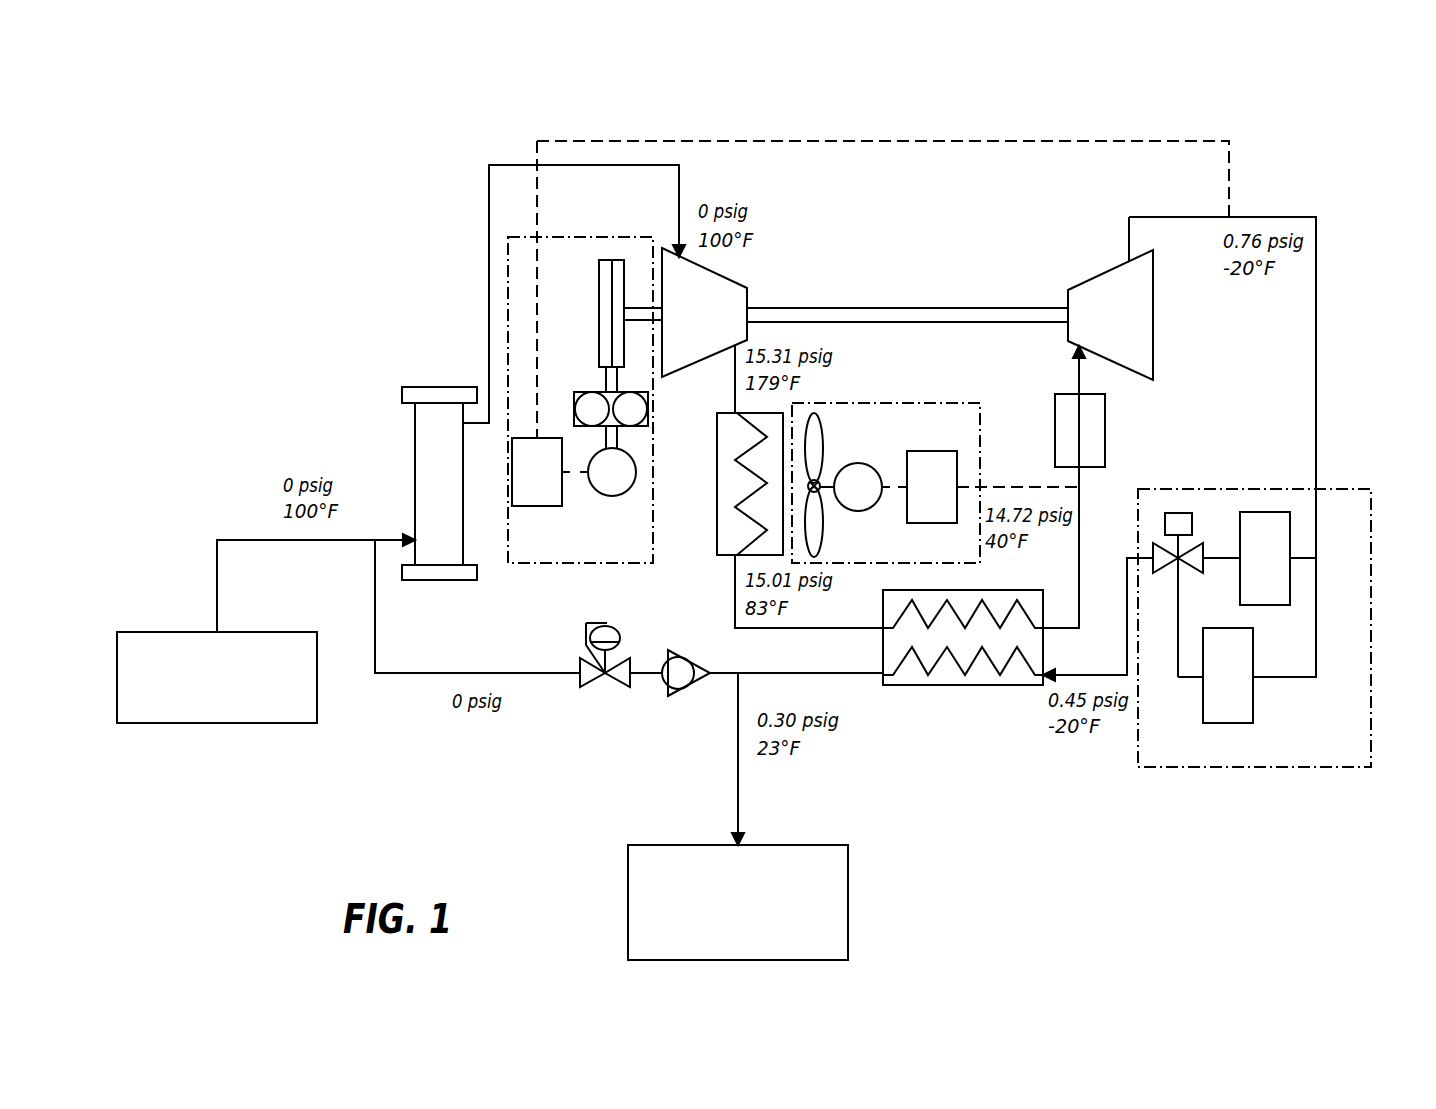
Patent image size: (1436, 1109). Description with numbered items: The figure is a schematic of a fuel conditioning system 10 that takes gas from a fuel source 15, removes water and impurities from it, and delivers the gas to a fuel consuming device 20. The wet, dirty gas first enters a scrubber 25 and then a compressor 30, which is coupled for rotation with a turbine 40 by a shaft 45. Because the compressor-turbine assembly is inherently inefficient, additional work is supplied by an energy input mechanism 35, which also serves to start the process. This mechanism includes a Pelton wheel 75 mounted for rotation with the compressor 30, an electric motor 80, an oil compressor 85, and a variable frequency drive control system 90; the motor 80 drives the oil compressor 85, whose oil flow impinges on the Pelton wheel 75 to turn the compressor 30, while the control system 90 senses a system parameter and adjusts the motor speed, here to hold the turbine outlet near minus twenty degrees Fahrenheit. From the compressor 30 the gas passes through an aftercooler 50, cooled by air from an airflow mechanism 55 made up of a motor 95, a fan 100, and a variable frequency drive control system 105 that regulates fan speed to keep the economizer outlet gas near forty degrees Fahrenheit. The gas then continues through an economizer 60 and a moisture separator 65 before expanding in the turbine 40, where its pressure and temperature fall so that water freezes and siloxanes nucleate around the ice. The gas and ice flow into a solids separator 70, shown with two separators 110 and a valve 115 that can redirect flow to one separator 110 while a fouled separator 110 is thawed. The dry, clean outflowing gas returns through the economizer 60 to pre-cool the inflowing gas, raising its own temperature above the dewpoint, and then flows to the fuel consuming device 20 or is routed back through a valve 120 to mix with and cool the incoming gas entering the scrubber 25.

The fuel conditioning system 10 is at (276, 146).
The fuel source 15 is at (168, 630).
The fuel consuming device 20 is at (628, 878).
The scrubber 25 is at (415, 442).
The compressor 30 is at (737, 283).
The energy input mechanism 35 is at (508, 283).
The turbine 40 is at (1100, 277).
The shaft 45 is at (855, 308).
The aftercooler 50 is at (717, 515).
The airflow mechanism 55 is at (847, 403).
The economizer 60 is at (938, 685).
The moisture separator 65 is at (1105, 441).
The solids separator 70 is at (1340, 488).
The Pelton wheel 75 is at (598, 283).
The electric motor 80 is at (597, 493).
The oil compressor 85 is at (575, 393).
The variable frequency drive control system 90 is at (525, 506).
The motor 95 is at (843, 466).
The fan 100 is at (823, 530).
The variable frequency drive control system 105 is at (925, 451).
The separator 110 is at (1272, 605).
The valve 115 is at (1180, 513).
The valve 120 is at (597, 687).